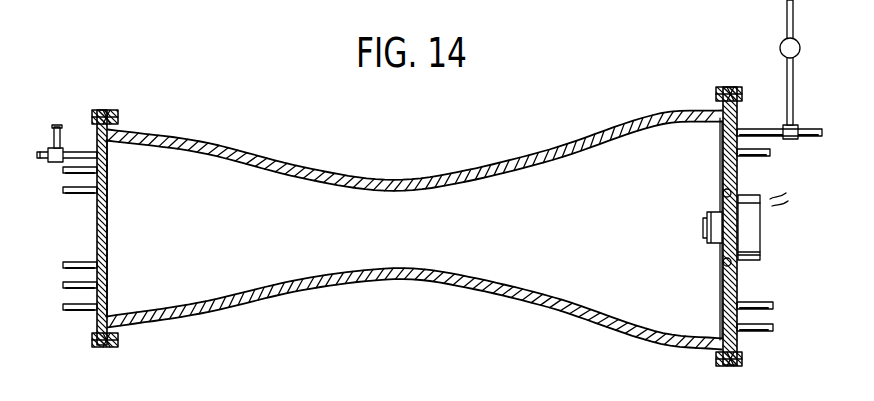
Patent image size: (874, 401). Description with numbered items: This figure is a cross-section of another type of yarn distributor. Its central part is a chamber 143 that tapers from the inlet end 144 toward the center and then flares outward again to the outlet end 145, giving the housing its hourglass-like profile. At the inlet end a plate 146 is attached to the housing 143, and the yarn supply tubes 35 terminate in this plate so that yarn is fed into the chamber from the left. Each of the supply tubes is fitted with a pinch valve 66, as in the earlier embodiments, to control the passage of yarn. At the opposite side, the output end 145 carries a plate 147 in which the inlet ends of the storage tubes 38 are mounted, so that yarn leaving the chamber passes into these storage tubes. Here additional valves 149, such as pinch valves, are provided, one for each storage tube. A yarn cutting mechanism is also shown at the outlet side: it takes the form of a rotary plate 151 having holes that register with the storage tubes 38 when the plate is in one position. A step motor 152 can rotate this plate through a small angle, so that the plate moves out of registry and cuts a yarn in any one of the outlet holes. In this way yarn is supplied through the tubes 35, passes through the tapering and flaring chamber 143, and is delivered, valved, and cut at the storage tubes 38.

The yarn supply tubes 35 is at (80, 175).
The storage tubes 38 is at (765, 129).
The pinch valves 66 is at (46, 148).
The chamber 143 is at (398, 180).
The inlet end 144 is at (113, 162).
The outlet end 145 is at (708, 137).
The plate 146 is at (107, 222).
The plate 147 is at (738, 160).
The valves 149 is at (793, 128).
The rotary plate 151 is at (723, 173).
The step motor 152 is at (761, 227).